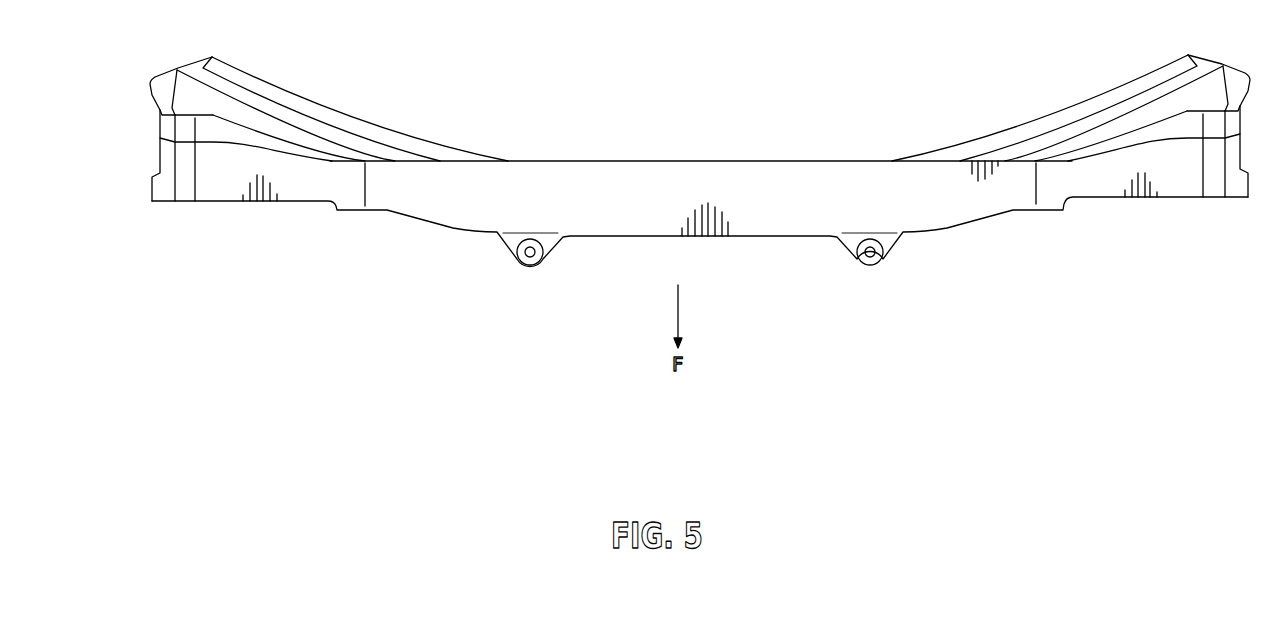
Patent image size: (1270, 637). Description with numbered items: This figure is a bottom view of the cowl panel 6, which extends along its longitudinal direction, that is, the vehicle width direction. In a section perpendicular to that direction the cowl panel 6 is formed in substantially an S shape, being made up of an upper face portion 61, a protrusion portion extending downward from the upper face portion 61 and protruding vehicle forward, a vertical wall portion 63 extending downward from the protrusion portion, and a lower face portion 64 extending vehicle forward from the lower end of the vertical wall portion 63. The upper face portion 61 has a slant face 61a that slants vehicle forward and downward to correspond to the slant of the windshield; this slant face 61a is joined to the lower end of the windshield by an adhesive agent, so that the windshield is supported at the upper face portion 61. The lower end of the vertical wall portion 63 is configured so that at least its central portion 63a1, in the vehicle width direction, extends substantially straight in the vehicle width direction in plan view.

The cowl panel 6 is at (700, 164).
The upper face portion 61 is at (395, 132).
The slant face 61a is at (320, 131).
The vertical wall portion 63 is at (252, 128).
The central portion 63a1 is at (660, 160).
The lower face portion 64 is at (465, 203).